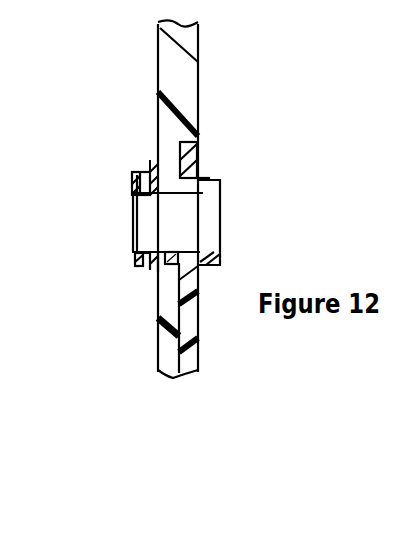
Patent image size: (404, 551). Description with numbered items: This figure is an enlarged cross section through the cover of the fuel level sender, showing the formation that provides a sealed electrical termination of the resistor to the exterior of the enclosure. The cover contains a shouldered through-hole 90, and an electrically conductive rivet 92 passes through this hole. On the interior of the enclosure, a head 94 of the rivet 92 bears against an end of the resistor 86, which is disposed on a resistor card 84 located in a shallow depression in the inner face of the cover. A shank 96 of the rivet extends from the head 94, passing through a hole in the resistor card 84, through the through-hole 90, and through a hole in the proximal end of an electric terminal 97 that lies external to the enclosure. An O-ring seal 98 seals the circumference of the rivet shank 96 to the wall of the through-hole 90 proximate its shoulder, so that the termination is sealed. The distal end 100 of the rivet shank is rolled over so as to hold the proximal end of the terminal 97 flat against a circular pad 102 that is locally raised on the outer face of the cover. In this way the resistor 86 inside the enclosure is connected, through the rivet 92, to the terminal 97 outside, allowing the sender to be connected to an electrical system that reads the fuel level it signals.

The resistor card 84 is at (200, 312).
The resistor 86 is at (215, 253).
The shouldered through-hole 90 is at (160, 170).
The electrically conductive rivet 92 is at (220, 180).
The head 94 is at (200, 222).
The shank 96 is at (152, 218).
The electric terminal 97 is at (147, 277).
The O-ring seal 98 is at (182, 143).
The distal end 100 is at (133, 247).
The circular pad 102 is at (150, 283).